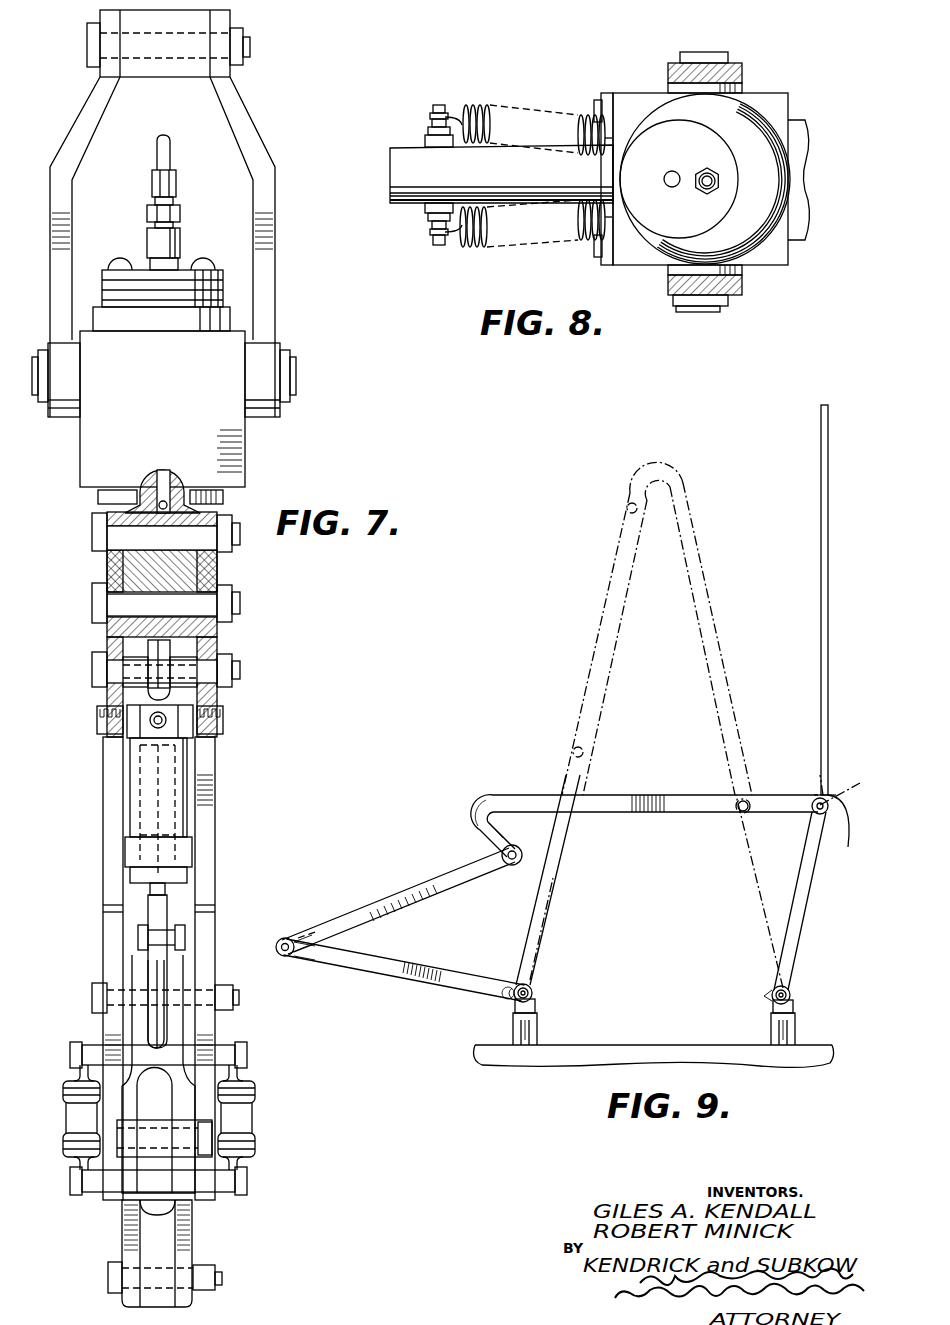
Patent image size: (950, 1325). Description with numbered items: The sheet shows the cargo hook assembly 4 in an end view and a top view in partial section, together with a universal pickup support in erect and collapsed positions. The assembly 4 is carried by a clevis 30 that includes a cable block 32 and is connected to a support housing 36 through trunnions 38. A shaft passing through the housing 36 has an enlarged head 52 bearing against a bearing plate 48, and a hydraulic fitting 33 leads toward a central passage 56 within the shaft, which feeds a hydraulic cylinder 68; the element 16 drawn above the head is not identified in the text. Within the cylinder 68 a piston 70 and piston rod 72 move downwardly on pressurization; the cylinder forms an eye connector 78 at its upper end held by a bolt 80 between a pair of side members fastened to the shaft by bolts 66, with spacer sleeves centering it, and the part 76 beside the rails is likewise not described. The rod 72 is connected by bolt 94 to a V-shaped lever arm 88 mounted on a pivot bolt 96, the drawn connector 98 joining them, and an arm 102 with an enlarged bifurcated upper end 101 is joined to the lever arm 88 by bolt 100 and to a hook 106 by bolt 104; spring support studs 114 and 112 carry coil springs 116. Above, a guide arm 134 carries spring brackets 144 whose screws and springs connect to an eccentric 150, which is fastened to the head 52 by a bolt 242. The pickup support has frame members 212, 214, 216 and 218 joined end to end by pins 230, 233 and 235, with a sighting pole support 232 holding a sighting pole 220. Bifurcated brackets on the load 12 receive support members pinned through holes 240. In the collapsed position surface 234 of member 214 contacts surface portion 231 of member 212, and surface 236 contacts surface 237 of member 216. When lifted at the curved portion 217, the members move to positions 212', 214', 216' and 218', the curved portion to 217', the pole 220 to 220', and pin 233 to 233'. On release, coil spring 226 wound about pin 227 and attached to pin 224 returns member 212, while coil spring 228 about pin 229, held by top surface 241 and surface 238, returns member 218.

In FIG. 7, the cargo hook assembly 4 is at (219, 570).
In FIG. 9, the load 12 is at (520, 1057).
In FIG. 7, the spark plug igniter 16 is at (156, 158).
In FIG. 7, the clevis 30 is at (232, 100).
In FIG. 7, the cable block 32 is at (193, 17).
In FIG. 8, the hydraulic fitting 33 is at (718, 185).
In FIG. 7, the support housing 36 is at (247, 443).
In FIG. 7, the trunnions 38 is at (292, 378).
In FIG. 8, the trunnions 38 is at (716, 308).
In FIG. 8, the bearing plate 48 is at (787, 142).
In FIG. 8, the enlarged head 52 is at (775, 104).
In FIG. 7, the central passage 56 is at (165, 470).
In FIG. 7, the bolts 66 is at (92, 533).
In FIG. 7, the hydraulic cylinder 68 is at (186, 812).
In FIG. 7, the piston 70 is at (195, 726).
In FIG. 7, the piston rod 72 is at (150, 820).
In FIG. 7, the clamp 76 is at (97, 715).
In FIG. 7, the eye connector 78 is at (168, 652).
In FIG. 7, the bolt 80 is at (100, 670).
In FIG. 7, the V-shaped lever arm 88 is at (133, 1028).
In FIG. 7, the bolt 94 is at (180, 927).
In FIG. 7, the pivot bolt 96 is at (234, 998).
In FIG. 7, the rod clevis 98 is at (152, 962).
In FIG. 7, the bolt 100 is at (214, 1120).
In FIG. 7, the enlarged bifurcated upper end 101 is at (121, 1110).
In FIG. 7, the arm 102 is at (190, 1238).
In FIG. 7, the bolt 104 is at (108, 1278).
In FIG. 7, the hook 106 is at (122, 1222).
In FIG. 7, the spring support studs 112 is at (246, 1053).
In FIG. 7, the spring support studs 114 is at (247, 1180).
In FIG. 7, the coil springs 116 is at (250, 1090).
In FIG. 8, the guide arm 134 is at (400, 150).
In FIG. 8, the spring brackets 144 is at (423, 203).
In FIG. 8, the eccentric 150 is at (712, 128).
In FIG. 9, the frame member 212 is at (404, 973).
In FIG. 9, the frame member position 212' is at (578, 917).
In FIG. 9, the frame member 214 is at (398, 901).
In FIG. 9, the frame member position 214' is at (587, 644).
In FIG. 9, the frame member 216 is at (644, 868).
In FIG. 9, the frame member position 216' is at (718, 639).
In FIG. 9, the curved portion 217 is at (450, 816).
In FIG. 9, the curved portion position 217' is at (677, 465).
In FIG. 9, the frame member 218 is at (820, 901).
In FIG. 9, the frame member position 218' is at (737, 891).
In FIG. 9, the sighting pole 220 is at (802, 626).
In FIG. 9, the sighting pole position 220' is at (808, 773).
In FIG. 9, the pin 224 is at (515, 1001).
In FIG. 9, the coil spring 226 is at (533, 980).
In FIG. 9, the pin 227 is at (533, 988).
In FIG. 9, the coil spring 228 is at (766, 998).
In FIG. 9, the pin 229 is at (791, 990).
In FIG. 9, the pin 230 is at (283, 942).
In FIG. 9, the surface portion 231 is at (308, 953).
In FIG. 9, the sighting pole support 232 is at (846, 828).
In FIG. 9, the pin 233 is at (776, 824).
In FIG. 9, the pin position 233' is at (720, 826).
In FIG. 9, the surface 234 is at (312, 927).
In FIG. 9, the pin 235 is at (512, 850).
In FIG. 9, the surface 236 is at (502, 857).
In FIG. 9, the surface 237 is at (514, 866).
In FIG. 9, the surface 238 is at (790, 980).
In FIG. 9, the holes 240 is at (797, 1030).
In FIG. 9, the top surface 241 is at (797, 1003).
In FIG. 8, the bolt 242 is at (666, 179).